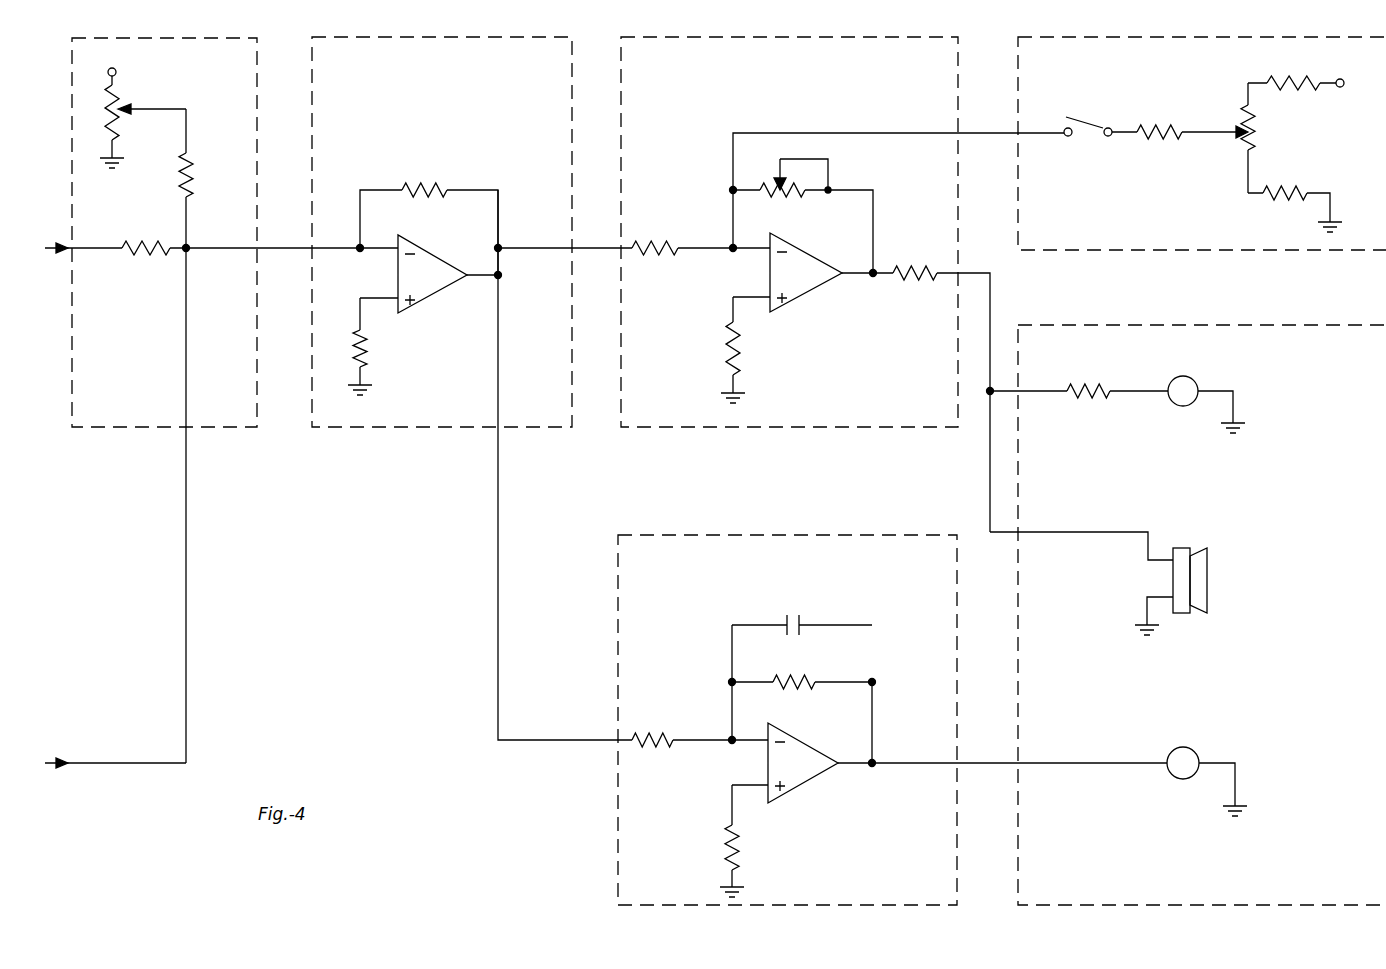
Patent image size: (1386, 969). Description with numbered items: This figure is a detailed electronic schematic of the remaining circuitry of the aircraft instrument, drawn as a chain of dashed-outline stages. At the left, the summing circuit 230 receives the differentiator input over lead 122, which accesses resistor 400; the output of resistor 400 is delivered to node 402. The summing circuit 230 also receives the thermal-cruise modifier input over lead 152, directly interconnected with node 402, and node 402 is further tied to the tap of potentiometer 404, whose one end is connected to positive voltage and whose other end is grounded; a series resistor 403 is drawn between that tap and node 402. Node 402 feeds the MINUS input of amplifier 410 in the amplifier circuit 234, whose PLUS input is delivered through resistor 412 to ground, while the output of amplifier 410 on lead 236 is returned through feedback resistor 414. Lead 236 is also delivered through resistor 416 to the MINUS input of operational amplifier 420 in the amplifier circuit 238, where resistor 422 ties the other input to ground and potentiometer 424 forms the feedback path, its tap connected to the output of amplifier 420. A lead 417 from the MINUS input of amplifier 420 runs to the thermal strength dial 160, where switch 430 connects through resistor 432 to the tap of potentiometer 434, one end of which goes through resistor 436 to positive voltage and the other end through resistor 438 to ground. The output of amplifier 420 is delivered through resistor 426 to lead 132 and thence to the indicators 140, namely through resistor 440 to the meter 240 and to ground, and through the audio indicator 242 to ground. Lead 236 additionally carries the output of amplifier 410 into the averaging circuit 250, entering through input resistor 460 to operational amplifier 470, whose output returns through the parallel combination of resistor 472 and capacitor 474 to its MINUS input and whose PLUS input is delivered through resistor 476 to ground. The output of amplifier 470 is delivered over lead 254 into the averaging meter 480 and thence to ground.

The lead 122 is at (58, 247).
The lead 152 is at (118, 763).
The summing circuit 230 is at (158, 430).
The resistor 400 is at (150, 258).
The node 402 is at (190, 252).
The resistor 403 is at (190, 158).
The potentiometer 404 is at (128, 116).
The amplifier circuit 234 is at (398, 430).
The amplifier 410 is at (452, 292).
The resistor 412 is at (368, 333).
The resistor 414 is at (442, 190).
The lead 236 is at (596, 252).
The amplifier circuit 238 is at (710, 430).
The resistor 416 is at (676, 244).
The gain control line 417 is at (845, 132).
The operational amplifier 420 is at (826, 288).
The resistor 422 is at (725, 352).
The potentiometer 424 is at (788, 197).
The resistor 426 is at (932, 266).
The lead 132 is at (988, 480).
The thermal strength dial 160 is at (1122, 255).
The switch 430 is at (1118, 104).
The resistor 432 is at (1182, 140).
The potentiometer 434 is at (1245, 138).
The resistor 436 is at (1278, 90).
The resistor 438 is at (1300, 200).
The indicators 140 is at (1222, 322).
The meter 240 is at (1173, 378).
The resistor 440 is at (1085, 398).
The audio indicator 242 is at (1180, 548).
The averaging circuit 250 is at (682, 536).
The input resistor 460 is at (656, 752).
The operational amplifier 470 is at (826, 778).
The resistor 472 is at (780, 680).
The capacitor 474 is at (787, 615).
The resistor 476 is at (736, 860).
The lead 254 is at (985, 766).
The averaging meter 480 is at (1200, 735).